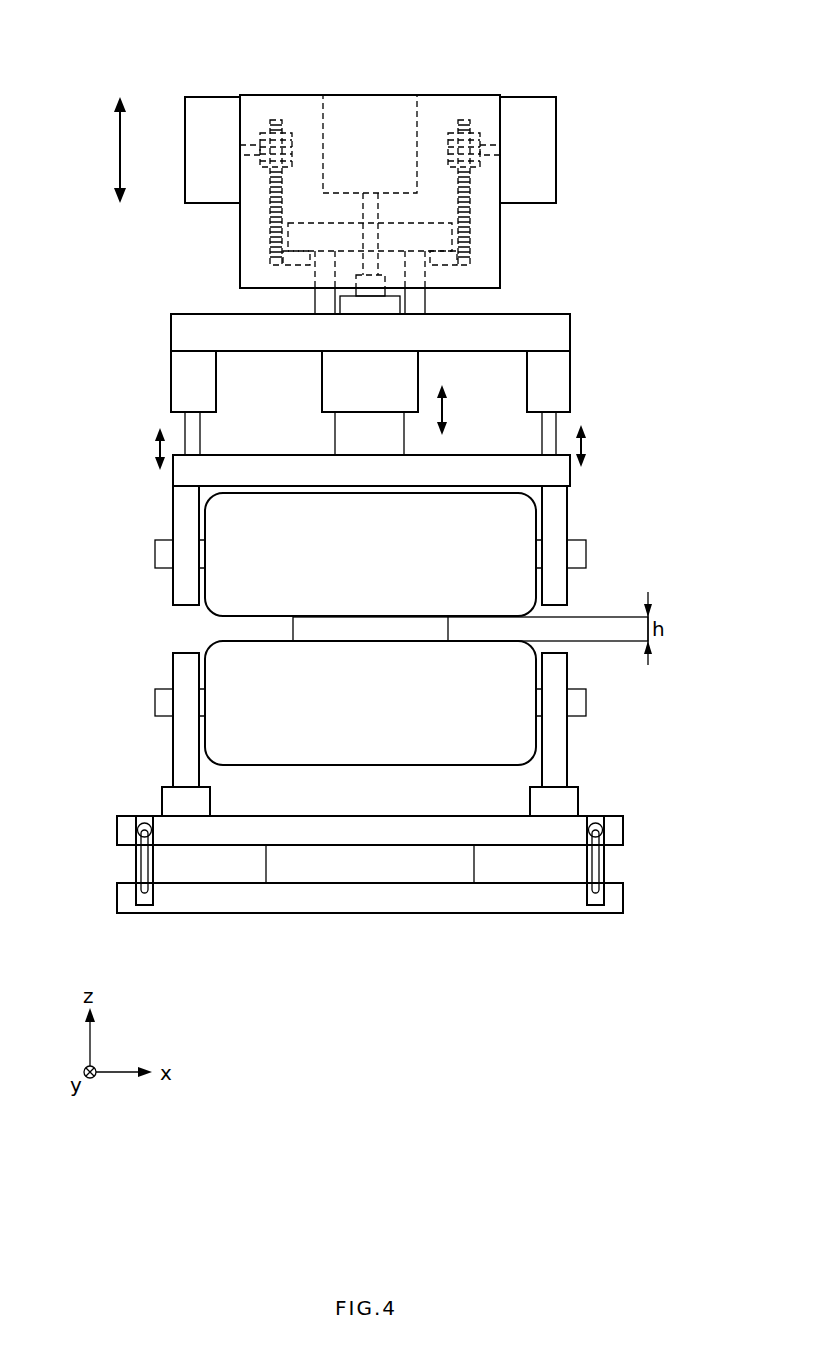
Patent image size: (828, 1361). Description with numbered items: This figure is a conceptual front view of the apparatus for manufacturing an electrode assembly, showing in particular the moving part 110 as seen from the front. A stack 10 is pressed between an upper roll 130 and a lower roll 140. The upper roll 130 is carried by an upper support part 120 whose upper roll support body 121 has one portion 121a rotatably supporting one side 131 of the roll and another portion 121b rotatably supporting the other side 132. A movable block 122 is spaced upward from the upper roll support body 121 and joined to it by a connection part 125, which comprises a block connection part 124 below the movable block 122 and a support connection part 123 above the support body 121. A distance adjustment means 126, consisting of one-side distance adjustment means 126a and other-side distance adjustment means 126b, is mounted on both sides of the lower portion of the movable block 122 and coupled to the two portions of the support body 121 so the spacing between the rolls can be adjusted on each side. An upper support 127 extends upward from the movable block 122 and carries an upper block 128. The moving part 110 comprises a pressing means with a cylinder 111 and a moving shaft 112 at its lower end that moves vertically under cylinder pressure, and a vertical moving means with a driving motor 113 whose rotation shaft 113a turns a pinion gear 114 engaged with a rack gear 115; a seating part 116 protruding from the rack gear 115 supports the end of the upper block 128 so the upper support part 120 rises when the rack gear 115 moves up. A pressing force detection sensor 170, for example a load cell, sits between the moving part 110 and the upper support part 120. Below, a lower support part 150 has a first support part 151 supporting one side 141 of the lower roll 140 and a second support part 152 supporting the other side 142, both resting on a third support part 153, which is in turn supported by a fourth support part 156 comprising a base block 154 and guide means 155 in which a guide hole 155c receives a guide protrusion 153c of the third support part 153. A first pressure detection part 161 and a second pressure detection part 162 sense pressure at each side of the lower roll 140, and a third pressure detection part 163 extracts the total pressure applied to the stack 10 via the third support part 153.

The moving part 110 is at (422, 70).
The cylinder 111 is at (370, 105).
The moving shaft 112 is at (380, 206).
The driving motor 113 is at (213, 100).
The rotation shaft 113a is at (252, 145).
The pinion gear 114 is at (294, 150).
The rack gear 115 is at (465, 120).
The seating part 116 is at (290, 265).
The upper support part 120 is at (359, 670).
The upper roll support body 121 is at (383, 537).
The one portion of upper roll support body 121a is at (173, 512).
The other portion of upper roll support body 121b is at (567, 512).
The movable block 122 is at (171, 332).
The support connection part 123 is at (335, 428).
The block connection part 124 is at (322, 380).
The connection part 125 is at (298, 404).
The distance adjustment means 126 is at (472, 982).
The one-side distance adjustment means 126a is at (171, 382).
The other-side distance adjustment means 126b is at (570, 382).
The upper support 127 is at (314, 301).
The upper block 128 is at (435, 236).
The upper roll 130 is at (552, 614).
The one side of upper roll 131 is at (155, 554).
The other side of upper roll 132 is at (586, 554).
The stack 10 is at (293, 630).
The lower roll 140 is at (202, 641).
The one side of lower roll 141 is at (155, 703).
The other side of lower roll 142 is at (586, 703).
The lower support part 150 is at (382, 824).
The first support part 151 is at (173, 742).
The second support part 152 is at (567, 742).
The third support part 153 is at (240, 830).
The guide protrusion 153c is at (603, 830).
The base block 154 is at (566, 902).
The guide means 155 is at (136, 856).
The guide hole 155c is at (598, 875).
The fourth support part 156 is at (382, 920).
The first pressure detection part 161 is at (162, 801).
The second pressure detection part 162 is at (578, 801).
The third pressure detection part 163 is at (370, 865).
The pressing force detection sensor 170 is at (405, 309).